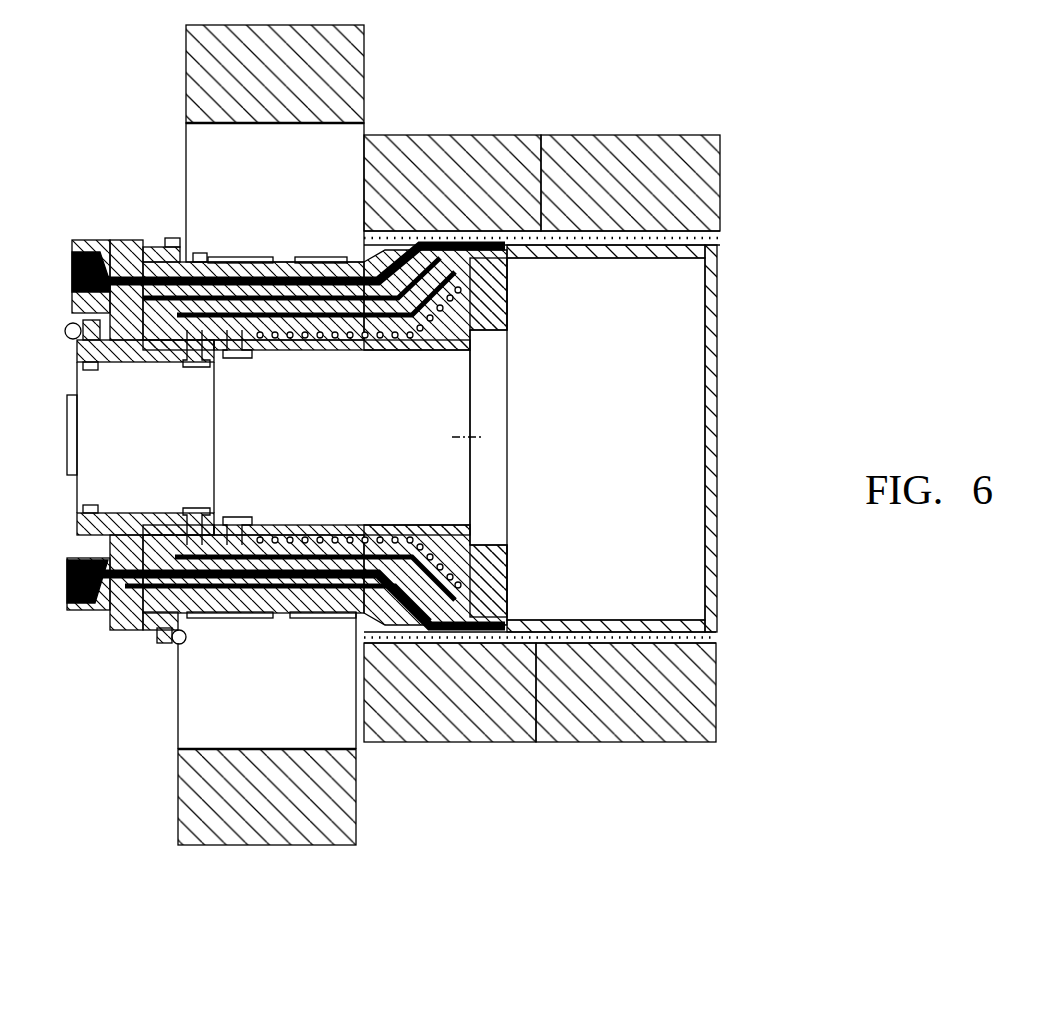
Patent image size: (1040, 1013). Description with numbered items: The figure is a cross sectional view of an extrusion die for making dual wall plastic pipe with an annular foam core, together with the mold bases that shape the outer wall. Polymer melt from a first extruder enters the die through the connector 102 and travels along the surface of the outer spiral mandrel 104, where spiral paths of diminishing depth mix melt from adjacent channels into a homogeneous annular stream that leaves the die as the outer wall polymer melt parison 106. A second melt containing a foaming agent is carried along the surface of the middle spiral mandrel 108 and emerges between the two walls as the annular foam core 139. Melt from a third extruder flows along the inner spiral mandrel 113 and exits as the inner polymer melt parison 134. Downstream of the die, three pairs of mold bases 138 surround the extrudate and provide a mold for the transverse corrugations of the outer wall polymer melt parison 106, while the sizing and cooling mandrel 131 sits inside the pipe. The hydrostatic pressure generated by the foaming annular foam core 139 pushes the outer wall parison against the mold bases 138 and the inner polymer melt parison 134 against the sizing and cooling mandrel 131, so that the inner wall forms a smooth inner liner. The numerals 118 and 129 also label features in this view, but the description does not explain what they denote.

The connector 102 is at (103, 250).
The outer spiral mandrel 104 is at (262, 270).
The outer wall polymer melt parison 106 is at (372, 232).
The middle spiral mandrel 108 is at (292, 332).
The inner spiral mandrel 113 is at (342, 332).
The retainer ring 118 is at (158, 258).
The retaining plate 129 is at (105, 520).
The sizing and cooling mandrel 131 is at (658, 258).
The inner polymer melt parison 134 is at (512, 258).
The mold bases 138 is at (642, 178).
The annular foam core 139 is at (510, 330).